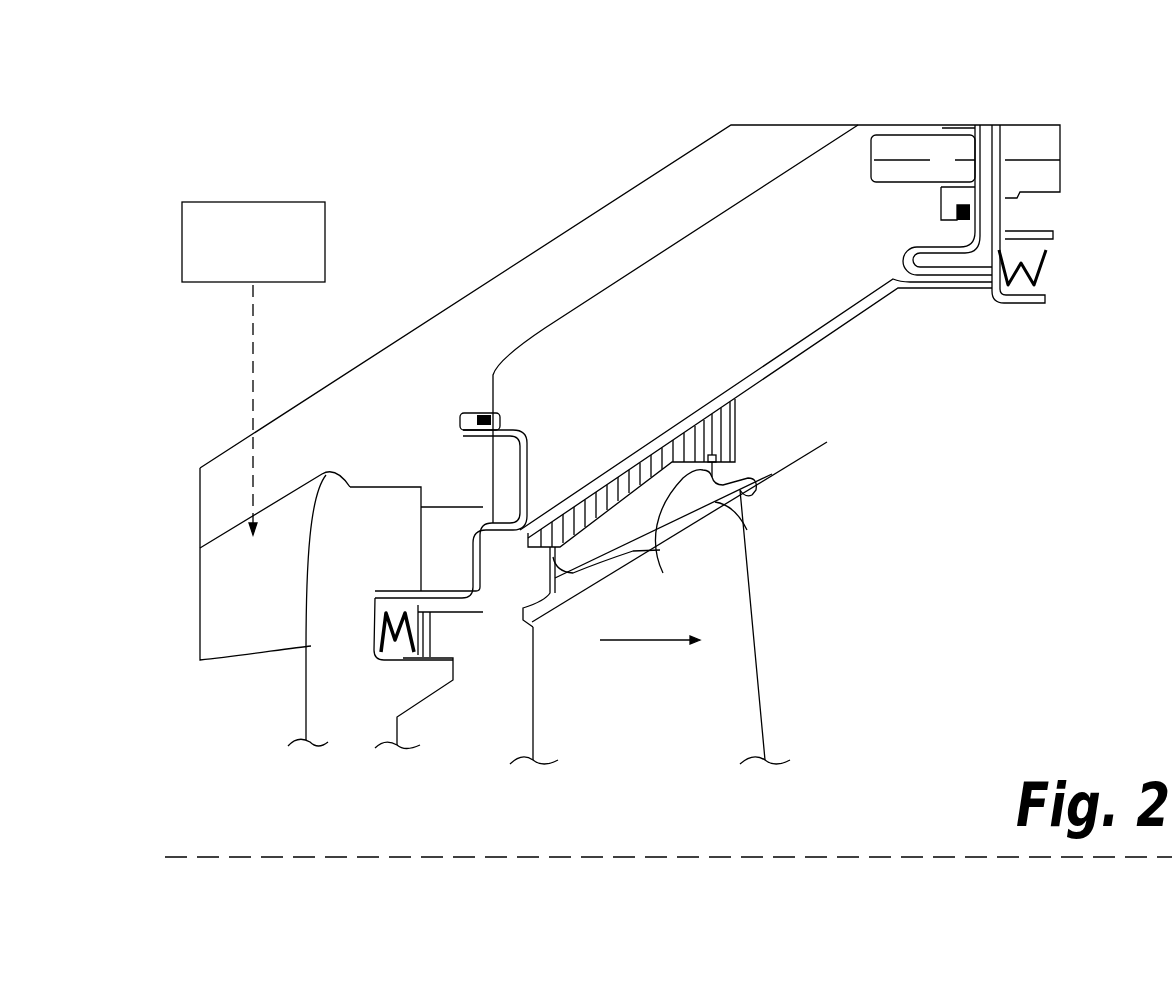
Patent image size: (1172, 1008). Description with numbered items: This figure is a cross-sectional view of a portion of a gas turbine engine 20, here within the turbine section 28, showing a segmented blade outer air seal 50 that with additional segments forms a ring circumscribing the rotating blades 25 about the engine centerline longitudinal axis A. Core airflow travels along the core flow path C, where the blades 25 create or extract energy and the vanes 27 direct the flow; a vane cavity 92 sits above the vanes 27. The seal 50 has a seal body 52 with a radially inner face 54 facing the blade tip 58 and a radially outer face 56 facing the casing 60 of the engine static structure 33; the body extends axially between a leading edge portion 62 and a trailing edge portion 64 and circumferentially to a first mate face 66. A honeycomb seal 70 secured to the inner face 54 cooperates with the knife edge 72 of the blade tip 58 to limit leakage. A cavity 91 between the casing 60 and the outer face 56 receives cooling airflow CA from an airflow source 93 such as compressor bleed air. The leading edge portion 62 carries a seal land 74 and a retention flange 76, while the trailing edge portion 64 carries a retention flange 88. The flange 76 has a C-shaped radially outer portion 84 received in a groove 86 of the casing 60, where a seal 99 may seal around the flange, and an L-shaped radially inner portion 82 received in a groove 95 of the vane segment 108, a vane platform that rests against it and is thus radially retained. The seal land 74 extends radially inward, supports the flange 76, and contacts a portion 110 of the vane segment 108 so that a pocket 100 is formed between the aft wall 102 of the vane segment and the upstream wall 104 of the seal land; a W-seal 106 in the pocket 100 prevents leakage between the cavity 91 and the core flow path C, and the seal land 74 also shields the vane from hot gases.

The gas turbine engine 20 is at (602, 301).
The blade 25 is at (665, 755).
The vane 27 is at (244, 730).
The turbine section 28 is at (210, 375).
The engine static structure 33 is at (362, 348).
The blade outer air seal 50 is at (756, 408).
The seal body 52 is at (756, 408).
The radially inner face 54 is at (780, 360).
The radially outer face 56 is at (712, 410).
The blade tip 58 is at (747, 530).
The casing 60 is at (472, 303).
The leading edge portion 62 is at (555, 470).
The trailing edge portion 64 is at (952, 306).
The first mate face 66 is at (873, 305).
The seal 70 is at (720, 432).
The knife edge 72 is at (663, 573).
The seal land 74 is at (483, 603).
The retention flange 76 is at (451, 502).
The radially inner portion 82 is at (455, 550).
The radially outer portion 84 is at (510, 461).
The groove 86 is at (475, 412).
The retention flange 88 is at (894, 224).
The cavity 91 is at (757, 252).
The vane cavity 92 is at (272, 573).
The airflow source 93 is at (327, 242).
The groove 95 is at (363, 612).
The seal 99 is at (492, 420).
The pocket 100 is at (403, 660).
The aft wall 102 is at (375, 617).
The upstream wall 104 is at (440, 649).
The seal 106 is at (375, 617).
The vane segment 108 is at (398, 532).
The portion 110 is at (453, 638).
The cooling airflow CA is at (255, 368).
The core flow path C is at (648, 642).
The engine centerline longitudinal axis A is at (693, 856).